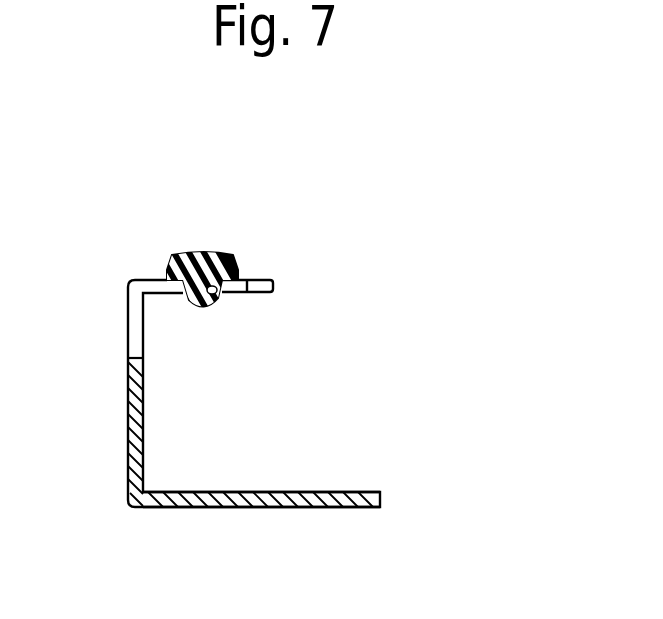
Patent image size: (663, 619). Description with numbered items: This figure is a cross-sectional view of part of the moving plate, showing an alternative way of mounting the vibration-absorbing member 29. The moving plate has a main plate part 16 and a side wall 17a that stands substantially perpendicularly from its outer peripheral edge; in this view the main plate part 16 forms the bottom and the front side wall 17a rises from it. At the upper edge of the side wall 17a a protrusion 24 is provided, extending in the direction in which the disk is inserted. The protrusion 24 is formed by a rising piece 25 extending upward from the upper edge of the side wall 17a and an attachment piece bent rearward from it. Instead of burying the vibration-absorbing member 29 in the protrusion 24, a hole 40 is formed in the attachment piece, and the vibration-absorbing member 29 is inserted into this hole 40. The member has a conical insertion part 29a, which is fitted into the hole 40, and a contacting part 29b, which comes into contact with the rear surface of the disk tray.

The main plate part 16 is at (218, 508).
The side wall 17a is at (135, 435).
The protrusion 24 is at (259, 293).
The rising piece 25 is at (136, 313).
The vibration-absorbing member 29 is at (210, 260).
The insertion part 29a is at (203, 304).
The contacting part 29b is at (198, 252).
The hole 40 is at (218, 298).